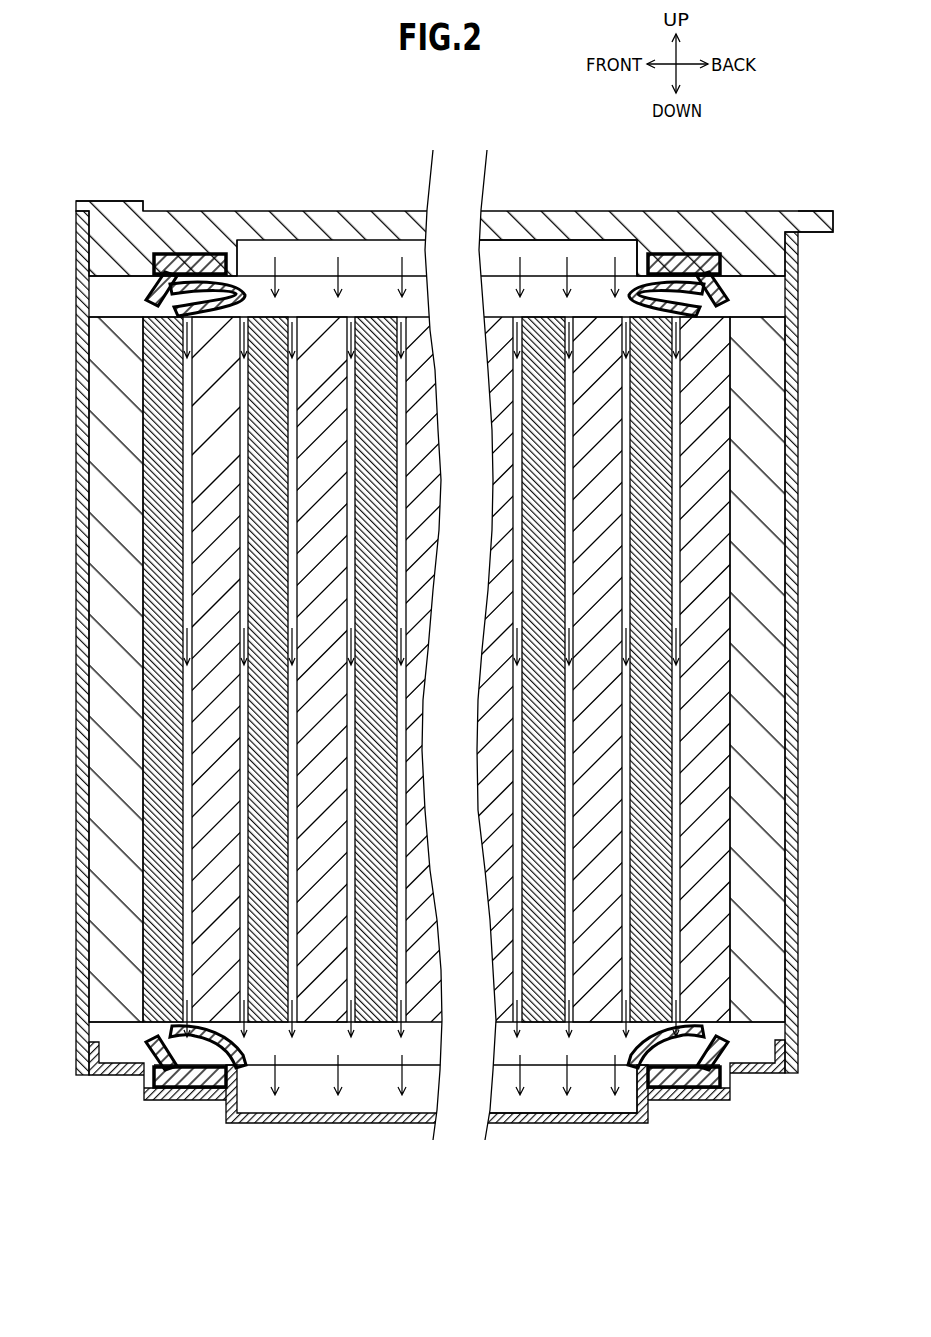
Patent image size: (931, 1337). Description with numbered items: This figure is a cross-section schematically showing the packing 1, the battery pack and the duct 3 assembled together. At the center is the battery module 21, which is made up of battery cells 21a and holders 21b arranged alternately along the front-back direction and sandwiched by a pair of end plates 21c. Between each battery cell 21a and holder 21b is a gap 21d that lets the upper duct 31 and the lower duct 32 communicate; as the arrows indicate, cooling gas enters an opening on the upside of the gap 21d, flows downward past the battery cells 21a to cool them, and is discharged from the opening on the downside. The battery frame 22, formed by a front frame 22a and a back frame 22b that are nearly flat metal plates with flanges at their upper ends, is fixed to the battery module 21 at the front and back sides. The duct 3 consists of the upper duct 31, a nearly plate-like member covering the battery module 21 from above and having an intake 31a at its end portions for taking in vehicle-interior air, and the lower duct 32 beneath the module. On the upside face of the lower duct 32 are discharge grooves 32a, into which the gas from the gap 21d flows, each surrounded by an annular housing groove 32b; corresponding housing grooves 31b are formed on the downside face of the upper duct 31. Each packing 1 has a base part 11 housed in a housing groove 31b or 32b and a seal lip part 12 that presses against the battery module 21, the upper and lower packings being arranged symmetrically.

The packing 1 is at (436, 607).
The duct 3 is at (454, 660).
The base part 11 is at (238, 262).
The seal lip part 12 is at (246, 280).
The battery module 21 is at (121, 285).
The battery cell 21a is at (318, 350).
The holder 21b is at (392, 300).
The end plate 21c is at (111, 345).
The gap 21d is at (288, 350).
The battery frame 22 is at (454, 186).
The front frame 22a is at (130, 206).
The back frame 22b is at (810, 226).
The upper duct 31 is at (512, 226).
The intake 31a is at (592, 265).
The housing groove 31b is at (232, 296).
The lower duct 32 is at (558, 1117).
The discharge groove 32a is at (507, 1112).
The housing groove 32b is at (212, 1090).